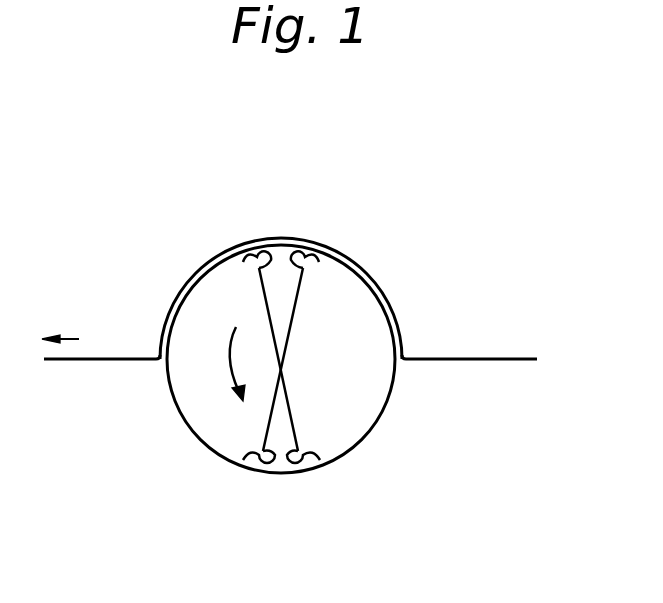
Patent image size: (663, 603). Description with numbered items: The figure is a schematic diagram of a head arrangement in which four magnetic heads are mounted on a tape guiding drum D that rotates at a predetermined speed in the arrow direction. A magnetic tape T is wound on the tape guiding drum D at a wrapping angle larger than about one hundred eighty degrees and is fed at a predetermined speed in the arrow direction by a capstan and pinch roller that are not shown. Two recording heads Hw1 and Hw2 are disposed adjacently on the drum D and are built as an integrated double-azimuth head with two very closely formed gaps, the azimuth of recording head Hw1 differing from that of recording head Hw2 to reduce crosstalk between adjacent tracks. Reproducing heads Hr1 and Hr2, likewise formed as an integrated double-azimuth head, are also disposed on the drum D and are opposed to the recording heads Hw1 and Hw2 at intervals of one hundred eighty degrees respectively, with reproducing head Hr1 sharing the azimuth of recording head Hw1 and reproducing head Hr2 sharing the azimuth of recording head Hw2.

The recording head Hw1 is at (233, 259).
The recording head Hw2 is at (343, 259).
The reproducing head Hr1 is at (340, 456).
The reproducing head Hr2 is at (241, 456).
The magnetic tape T is at (430, 358).
The tape guiding drum D is at (389, 398).